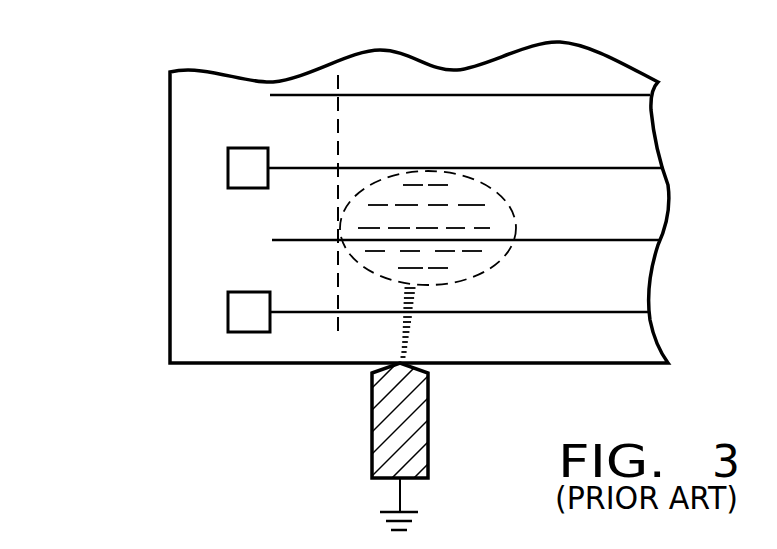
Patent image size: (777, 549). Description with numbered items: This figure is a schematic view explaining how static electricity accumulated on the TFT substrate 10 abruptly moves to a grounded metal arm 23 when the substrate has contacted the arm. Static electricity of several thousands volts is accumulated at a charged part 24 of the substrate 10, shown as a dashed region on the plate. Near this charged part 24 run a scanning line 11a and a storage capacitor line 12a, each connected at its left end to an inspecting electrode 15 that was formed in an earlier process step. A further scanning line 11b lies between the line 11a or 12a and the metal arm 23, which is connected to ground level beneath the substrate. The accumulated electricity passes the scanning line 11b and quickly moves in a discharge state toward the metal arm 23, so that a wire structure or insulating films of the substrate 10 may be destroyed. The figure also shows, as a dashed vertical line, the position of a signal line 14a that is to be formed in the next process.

The TFT substrate 10 is at (157, 163).
The signal line 14a is at (340, 88).
The scanning line 11a is at (563, 168).
The storage capacitor line 12a is at (592, 240).
The scanning line 11b is at (585, 312).
The inspecting electrode 15 is at (250, 292).
The charged part 24 is at (483, 275).
The metal arm 23 is at (428, 428).